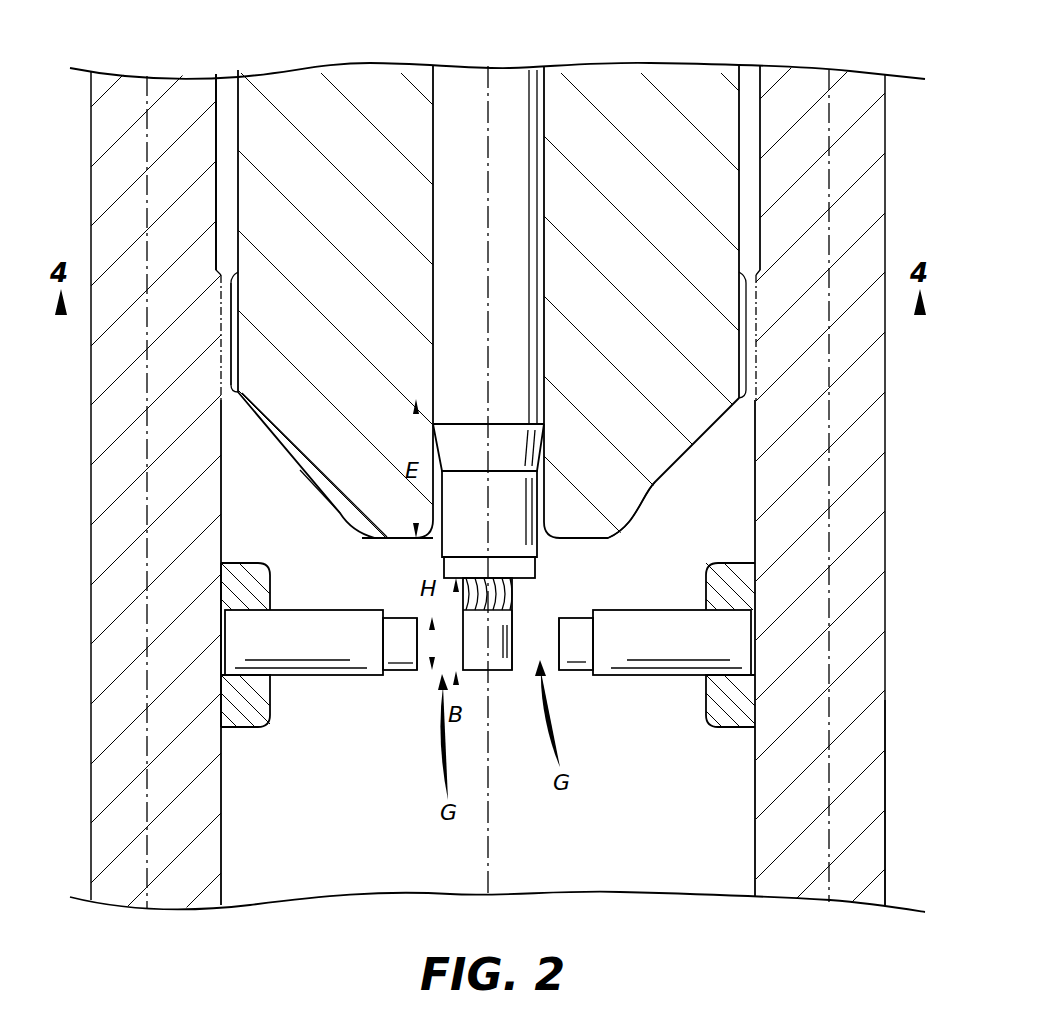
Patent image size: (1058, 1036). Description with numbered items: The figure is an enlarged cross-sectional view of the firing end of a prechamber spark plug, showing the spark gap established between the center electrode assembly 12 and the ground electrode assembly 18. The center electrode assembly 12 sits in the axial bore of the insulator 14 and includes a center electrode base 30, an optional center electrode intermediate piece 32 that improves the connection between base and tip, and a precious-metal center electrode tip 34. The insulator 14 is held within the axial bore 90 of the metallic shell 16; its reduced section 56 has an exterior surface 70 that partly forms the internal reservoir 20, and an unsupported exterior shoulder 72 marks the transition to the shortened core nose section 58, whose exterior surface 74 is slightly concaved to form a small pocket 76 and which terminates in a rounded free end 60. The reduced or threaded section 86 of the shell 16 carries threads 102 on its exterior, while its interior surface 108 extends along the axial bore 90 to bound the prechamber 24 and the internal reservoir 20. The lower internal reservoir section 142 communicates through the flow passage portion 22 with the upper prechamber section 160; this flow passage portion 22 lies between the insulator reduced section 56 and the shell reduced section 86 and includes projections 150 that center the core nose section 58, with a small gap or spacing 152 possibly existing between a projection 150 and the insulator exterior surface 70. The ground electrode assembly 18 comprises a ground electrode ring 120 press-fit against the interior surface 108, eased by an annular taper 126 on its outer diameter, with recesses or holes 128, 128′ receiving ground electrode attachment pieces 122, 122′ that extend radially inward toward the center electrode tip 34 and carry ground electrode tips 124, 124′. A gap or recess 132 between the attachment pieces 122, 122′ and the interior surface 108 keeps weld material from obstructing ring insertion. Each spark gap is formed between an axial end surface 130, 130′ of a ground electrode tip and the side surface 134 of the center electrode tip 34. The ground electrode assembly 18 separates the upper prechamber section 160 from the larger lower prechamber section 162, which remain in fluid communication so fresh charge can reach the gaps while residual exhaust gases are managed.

The center electrode assembly 12 is at (518, 390).
The insulator 14 is at (643, 115).
The metallic shell 16 is at (851, 130).
The ground electrode assembly 18 is at (654, 700).
The internal reservoir 20 is at (752, 88).
The flow passage portion 22 is at (752, 258).
The prechamber 24 is at (300, 870).
The center electrode base 30 is at (515, 510).
The center electrode intermediate piece 32 is at (512, 578).
The center electrode tip 34 is at (500, 660).
The reduced section 56 is at (262, 147).
The core nose section 58 is at (357, 473).
The free end 60 is at (378, 543).
The exterior surface 70 is at (236, 196).
The exterior shoulder 72 is at (742, 400).
The exterior surface 74 is at (290, 449).
The small pocket 76 is at (298, 471).
The reduced or threaded section 86 is at (197, 108).
The axial bore 90 is at (222, 790).
The threads 102 is at (872, 786).
The interior surface 108 is at (216, 232).
The ground electrode ring 120 is at (746, 585).
The ground electrode attachment piece 122 is at (326, 630).
The ground electrode attachment piece 122′ is at (668, 625).
The ground electrode tip 124 is at (400, 657).
The ground electrode tip 124′ is at (576, 660).
The annular taper 126 is at (225, 566).
The recess or hole 128 is at (268, 627).
The recess or hole 128′ is at (723, 660).
The axial end surface 130 is at (417, 648).
The axial end surface 130′ is at (558, 636).
The gap or recess 132 is at (225, 648).
The side surface 134 is at (512, 642).
The lower internal reservoir section 142 is at (752, 160).
The projection 150 is at (757, 297).
The small gap or spacing 152 is at (234, 282).
The upper prechamber section 160 is at (724, 503).
The lower prechamber section 162 is at (702, 868).